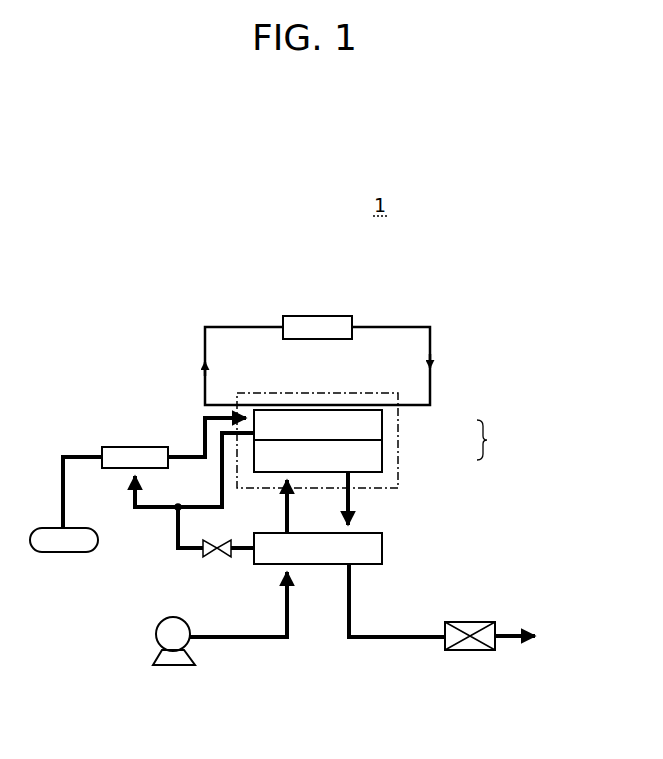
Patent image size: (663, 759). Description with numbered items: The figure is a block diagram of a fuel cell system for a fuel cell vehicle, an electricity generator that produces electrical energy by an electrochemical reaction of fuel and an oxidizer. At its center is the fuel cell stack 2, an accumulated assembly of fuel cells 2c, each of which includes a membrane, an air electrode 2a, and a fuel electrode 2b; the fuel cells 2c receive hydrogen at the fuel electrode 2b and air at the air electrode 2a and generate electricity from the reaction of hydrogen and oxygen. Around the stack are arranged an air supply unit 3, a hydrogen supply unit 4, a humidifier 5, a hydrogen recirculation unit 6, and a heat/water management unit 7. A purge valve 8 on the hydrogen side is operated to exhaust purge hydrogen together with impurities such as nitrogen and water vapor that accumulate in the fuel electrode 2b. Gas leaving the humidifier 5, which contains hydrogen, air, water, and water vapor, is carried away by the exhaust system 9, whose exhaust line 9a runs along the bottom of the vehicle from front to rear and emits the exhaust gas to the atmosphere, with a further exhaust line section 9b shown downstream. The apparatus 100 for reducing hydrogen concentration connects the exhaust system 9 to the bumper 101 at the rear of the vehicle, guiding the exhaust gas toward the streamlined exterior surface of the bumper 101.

The fuel cell stack 2 is at (398, 484).
The air electrode 2a is at (382, 455).
The fuel electrode 2b is at (382, 422).
The fuel cells 2c is at (495, 440).
The air supply unit 3 is at (175, 668).
The hydrogen supply unit 4 is at (56, 560).
The humidifier 5 is at (382, 548).
The hydrogen recirculation unit 6 is at (133, 447).
The heat/water management unit 7 is at (317, 316).
The purge valve 8 is at (213, 556).
The exhaust system 9 is at (349, 644).
The exhaust line 9a is at (384, 642).
The discharge line second portion 9b is at (441, 642).
The apparatus for reducing hydrogen concentration 100 is at (468, 655).
The bumper 101 is at (467, 620).